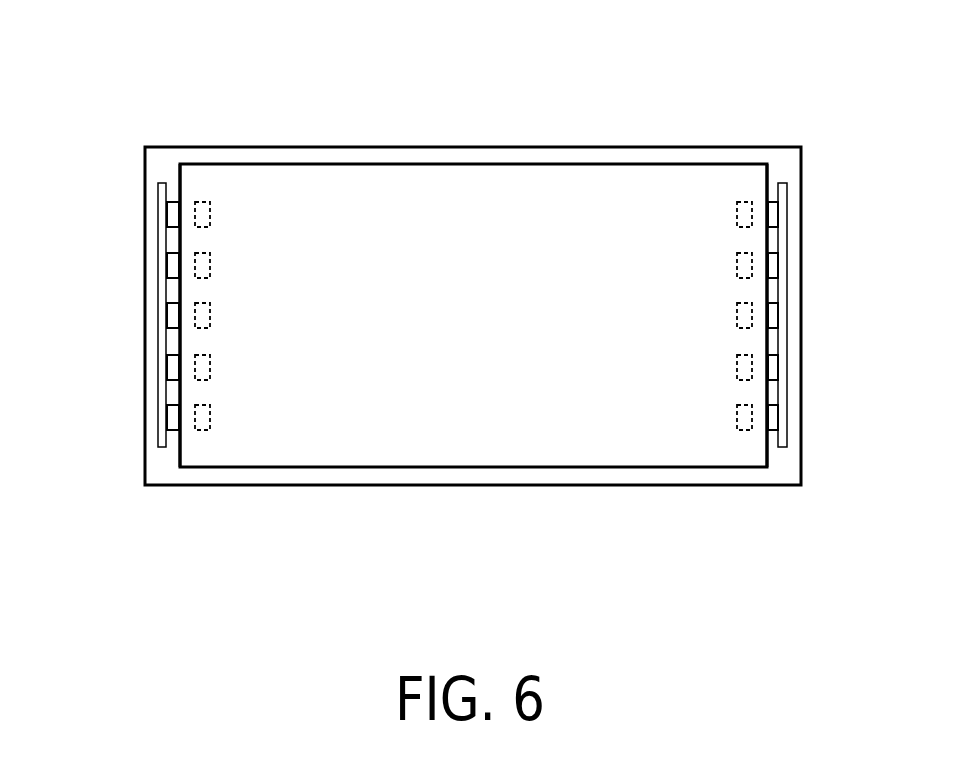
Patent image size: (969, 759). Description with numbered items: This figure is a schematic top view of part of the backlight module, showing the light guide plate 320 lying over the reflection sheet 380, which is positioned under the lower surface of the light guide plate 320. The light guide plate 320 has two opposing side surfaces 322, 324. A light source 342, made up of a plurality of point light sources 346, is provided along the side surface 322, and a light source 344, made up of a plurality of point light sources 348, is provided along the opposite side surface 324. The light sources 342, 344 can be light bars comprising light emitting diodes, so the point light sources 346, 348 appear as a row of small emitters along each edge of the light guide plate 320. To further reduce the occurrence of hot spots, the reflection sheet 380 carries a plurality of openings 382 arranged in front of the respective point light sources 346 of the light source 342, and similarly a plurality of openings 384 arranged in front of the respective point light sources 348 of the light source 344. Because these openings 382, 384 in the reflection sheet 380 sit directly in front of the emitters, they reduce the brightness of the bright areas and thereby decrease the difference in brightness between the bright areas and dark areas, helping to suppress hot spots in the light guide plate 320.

The light guide plate 320 is at (495, 400).
The side surface 322 is at (172, 247).
The side surface 324 is at (765, 242).
The light source 342 is at (160, 180).
The light source 344 is at (783, 178).
The point light sources 346 is at (168, 207).
The point light sources 348 is at (779, 215).
The reflection sheet 380 is at (687, 487).
The openings 382 is at (211, 212).
The openings 384 is at (733, 213).